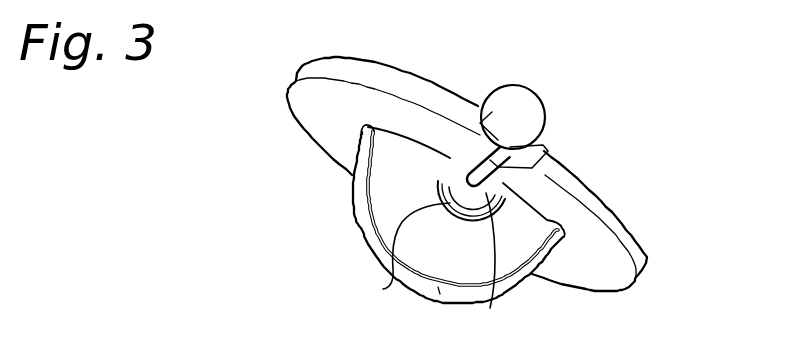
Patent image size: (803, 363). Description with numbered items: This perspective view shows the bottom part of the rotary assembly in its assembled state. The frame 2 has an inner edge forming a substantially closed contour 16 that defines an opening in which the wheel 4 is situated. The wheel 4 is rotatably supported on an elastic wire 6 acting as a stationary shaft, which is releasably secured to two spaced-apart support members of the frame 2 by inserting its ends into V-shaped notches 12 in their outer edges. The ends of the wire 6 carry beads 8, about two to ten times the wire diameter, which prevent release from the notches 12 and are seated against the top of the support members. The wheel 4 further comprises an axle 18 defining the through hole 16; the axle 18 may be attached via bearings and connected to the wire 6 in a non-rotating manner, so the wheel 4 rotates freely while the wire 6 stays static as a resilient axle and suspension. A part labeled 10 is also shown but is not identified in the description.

The frame 2 is at (622, 254).
The wheel 4 is at (393, 200).
The elastic wire 6 is at (480, 117).
The bead 8 is at (527, 118).
The cup 10 is at (440, 288).
The V-shaped notch 12 is at (540, 165).
The through hole 16 is at (490, 308).
The axle 18 is at (383, 289).